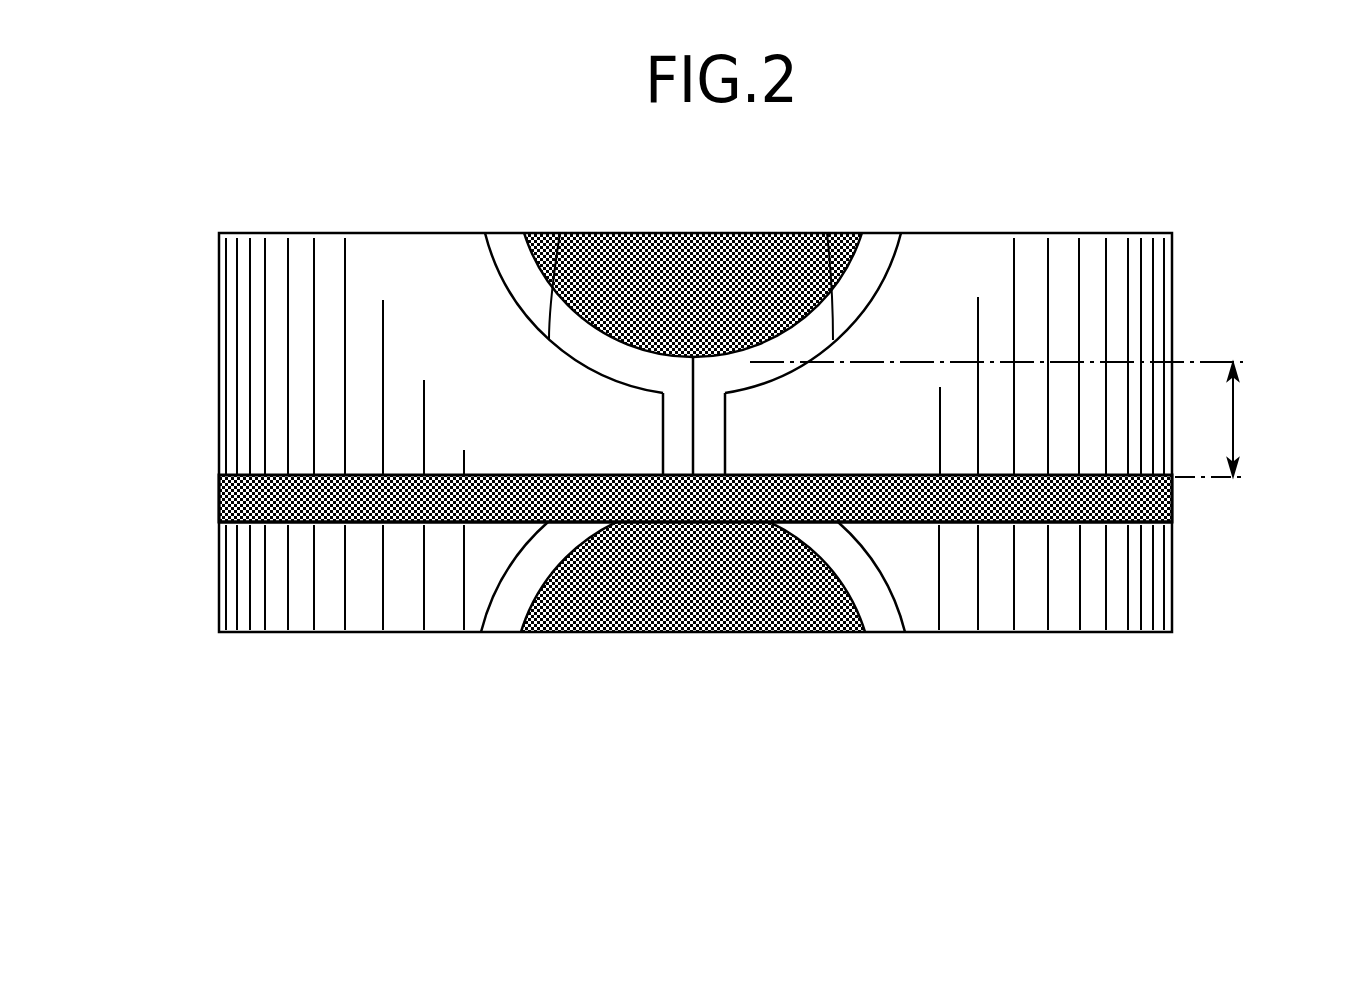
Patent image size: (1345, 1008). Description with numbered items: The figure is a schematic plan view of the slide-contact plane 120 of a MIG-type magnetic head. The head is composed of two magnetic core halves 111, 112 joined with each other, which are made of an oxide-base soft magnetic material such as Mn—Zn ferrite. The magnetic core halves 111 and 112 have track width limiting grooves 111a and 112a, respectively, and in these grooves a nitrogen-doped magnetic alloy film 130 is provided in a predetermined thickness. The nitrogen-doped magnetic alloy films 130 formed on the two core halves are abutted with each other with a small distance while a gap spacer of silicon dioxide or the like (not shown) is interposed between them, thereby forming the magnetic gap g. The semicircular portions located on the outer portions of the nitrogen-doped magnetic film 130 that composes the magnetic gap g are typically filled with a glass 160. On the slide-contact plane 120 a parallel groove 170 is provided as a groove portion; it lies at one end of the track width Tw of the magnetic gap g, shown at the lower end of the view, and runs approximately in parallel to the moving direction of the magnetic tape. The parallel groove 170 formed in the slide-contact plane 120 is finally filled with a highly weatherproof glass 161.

The slide-contact plane 120 is at (1238, 187).
The magnetic core half 111 is at (1157, 578).
The magnetic core half 112 is at (233, 580).
The track width limiting groove 111a is at (829, 267).
The track width limiting groove 112a is at (565, 267).
The nitrogen-doped magnetic alloy film 130 is at (502, 257).
The glass 160 is at (741, 253).
The highly weatherproof glass 161 is at (1150, 502).
The parallel groove 170 is at (1013, 510).
The magnetic gap g is at (695, 368).
The track width Tw is at (1014, 419).